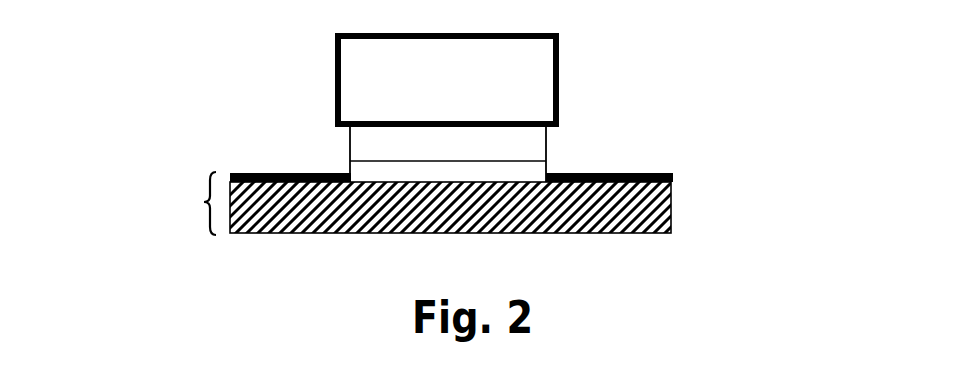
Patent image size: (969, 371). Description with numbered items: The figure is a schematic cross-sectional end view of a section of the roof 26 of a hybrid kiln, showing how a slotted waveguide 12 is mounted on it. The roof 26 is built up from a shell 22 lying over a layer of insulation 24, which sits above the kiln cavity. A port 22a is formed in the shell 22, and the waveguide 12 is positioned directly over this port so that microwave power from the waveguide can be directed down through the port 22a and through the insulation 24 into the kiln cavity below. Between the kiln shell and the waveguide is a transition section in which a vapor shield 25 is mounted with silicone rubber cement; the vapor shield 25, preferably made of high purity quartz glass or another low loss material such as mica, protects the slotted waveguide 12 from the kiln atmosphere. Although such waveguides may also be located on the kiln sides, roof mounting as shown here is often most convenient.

The waveguide 12 is at (559, 34).
The shell 22 is at (675, 172).
The port 22a is at (353, 182).
The insulation 24 is at (657, 223).
The vapor shield 25 is at (425, 161).
The roof 26 is at (203, 202).